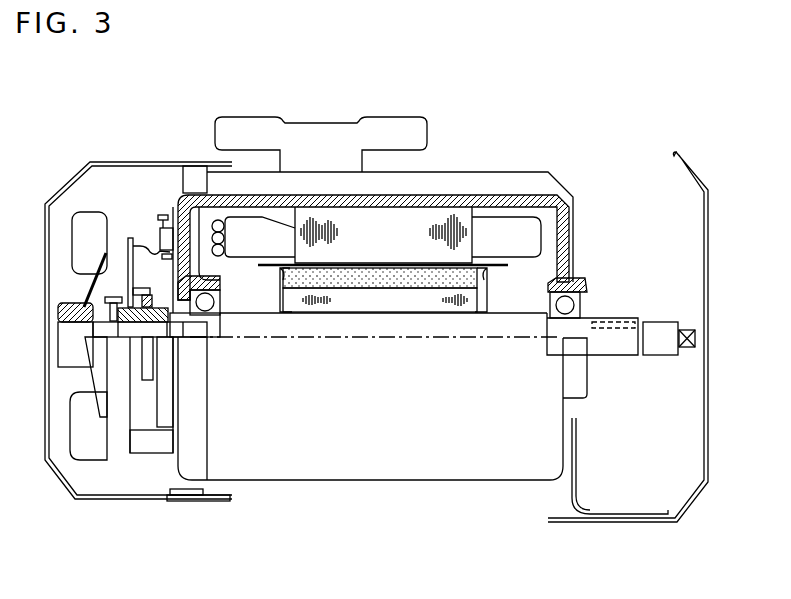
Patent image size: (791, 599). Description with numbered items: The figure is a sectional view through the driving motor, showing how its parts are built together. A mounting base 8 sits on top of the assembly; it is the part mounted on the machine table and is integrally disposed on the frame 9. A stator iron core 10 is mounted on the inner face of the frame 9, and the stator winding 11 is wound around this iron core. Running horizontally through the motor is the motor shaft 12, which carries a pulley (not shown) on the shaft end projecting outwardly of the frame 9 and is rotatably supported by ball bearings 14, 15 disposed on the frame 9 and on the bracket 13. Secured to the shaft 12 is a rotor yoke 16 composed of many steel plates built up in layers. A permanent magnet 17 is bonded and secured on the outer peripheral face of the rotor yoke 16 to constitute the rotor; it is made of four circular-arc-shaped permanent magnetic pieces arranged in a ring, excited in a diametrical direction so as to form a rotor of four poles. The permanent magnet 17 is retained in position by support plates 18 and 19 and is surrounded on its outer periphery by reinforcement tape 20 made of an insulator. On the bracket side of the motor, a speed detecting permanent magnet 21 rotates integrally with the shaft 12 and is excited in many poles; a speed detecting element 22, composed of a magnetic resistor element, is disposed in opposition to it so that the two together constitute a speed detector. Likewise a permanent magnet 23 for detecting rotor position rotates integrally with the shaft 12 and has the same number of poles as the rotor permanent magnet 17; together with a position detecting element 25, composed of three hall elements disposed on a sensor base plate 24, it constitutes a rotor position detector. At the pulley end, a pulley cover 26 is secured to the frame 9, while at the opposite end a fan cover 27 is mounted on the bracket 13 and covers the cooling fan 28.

The mounting base 8 is at (414, 129).
The frame 9 is at (452, 197).
The stator iron core 10 is at (472, 224).
The field coil 11 is at (532, 238).
The motor shaft 12 is at (508, 318).
The bracket 13 is at (183, 191).
The bearing 14 is at (220, 298).
The bearing 15 is at (580, 303).
The rotor yoke 16 is at (377, 306).
The permanent magnet 17 is at (340, 288).
The support plate 18 is at (271, 313).
The support plate 19 is at (482, 307).
The reinforcement tape 20 is at (438, 270).
The speed detecting permanent magnet 21 is at (157, 247).
The speed detecting element 22 is at (157, 217).
The permanent magnet for detecting rotor position 23 is at (178, 338).
The sensor base plate 24 is at (128, 260).
The position detecting element 25 is at (138, 288).
The pulley cover 26 is at (678, 154).
The fan cover 27 is at (68, 181).
The cooling fan 28 is at (91, 218).